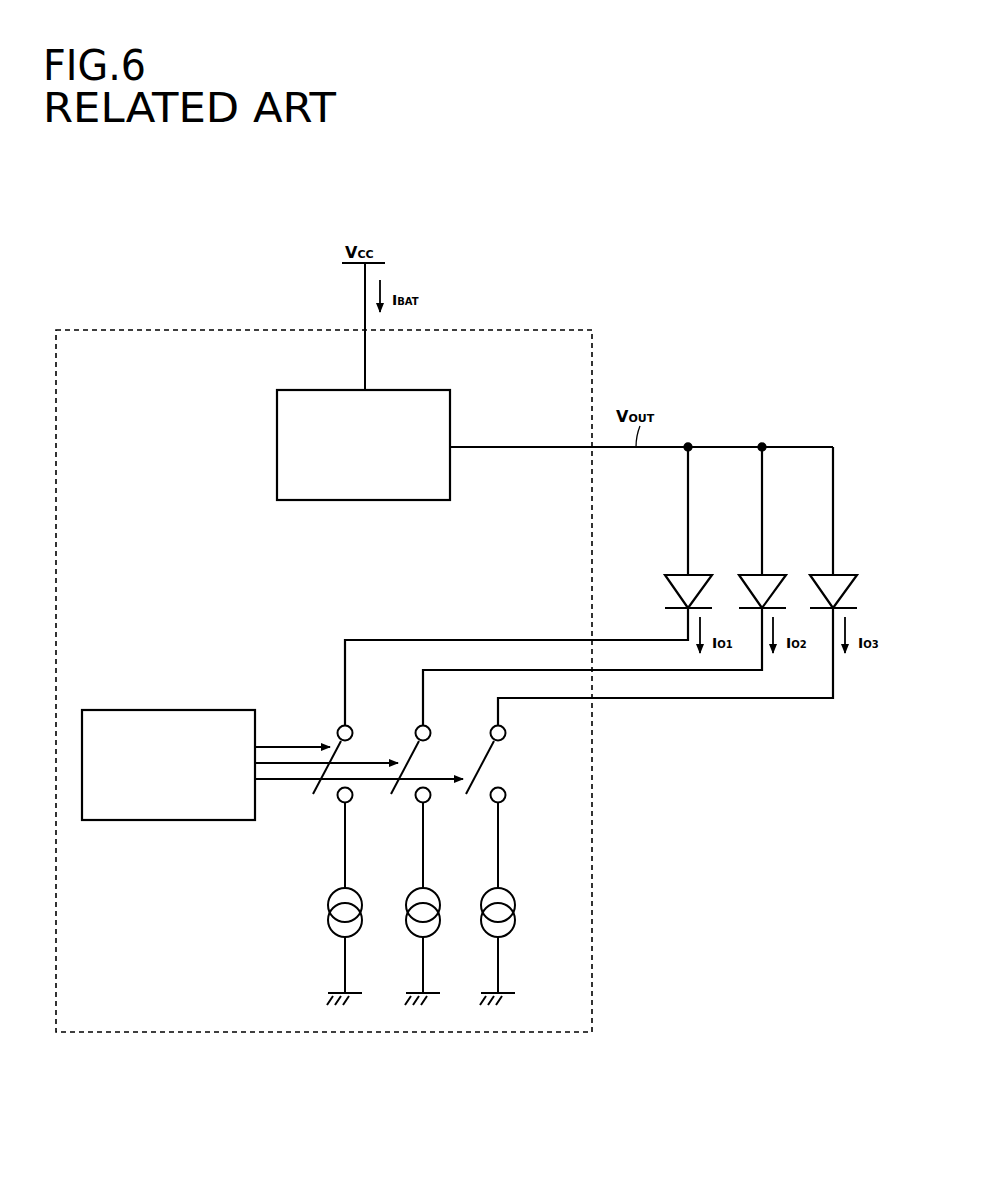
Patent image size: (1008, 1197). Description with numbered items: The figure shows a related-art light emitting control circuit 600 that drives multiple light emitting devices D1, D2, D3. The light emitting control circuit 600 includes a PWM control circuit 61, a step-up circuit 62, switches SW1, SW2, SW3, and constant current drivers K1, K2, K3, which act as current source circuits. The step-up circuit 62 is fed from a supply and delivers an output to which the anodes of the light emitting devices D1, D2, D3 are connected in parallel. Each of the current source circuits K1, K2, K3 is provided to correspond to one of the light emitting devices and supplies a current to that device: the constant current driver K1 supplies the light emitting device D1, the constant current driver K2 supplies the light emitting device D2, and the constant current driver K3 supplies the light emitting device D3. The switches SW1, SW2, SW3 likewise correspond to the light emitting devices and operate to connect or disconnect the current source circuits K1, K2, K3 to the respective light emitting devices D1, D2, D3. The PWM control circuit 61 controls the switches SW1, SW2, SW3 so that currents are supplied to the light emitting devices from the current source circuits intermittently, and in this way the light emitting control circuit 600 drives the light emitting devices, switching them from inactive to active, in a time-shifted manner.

The light emitting control circuit 600 is at (500, 331).
The PWM control circuit 61 is at (117, 709).
The step-up circuit 62 is at (310, 389).
The light emitting device D1 is at (676, 574).
The light emitting device D2 is at (749, 574).
The light emitting device D3 is at (821, 574).
The switch SW1 is at (333, 746).
The switch SW2 is at (406, 750).
The switch SW3 is at (483, 760).
The constant current driver K1 is at (329, 890).
The constant current driver K2 is at (406, 890).
The constant current driver K3 is at (483, 890).